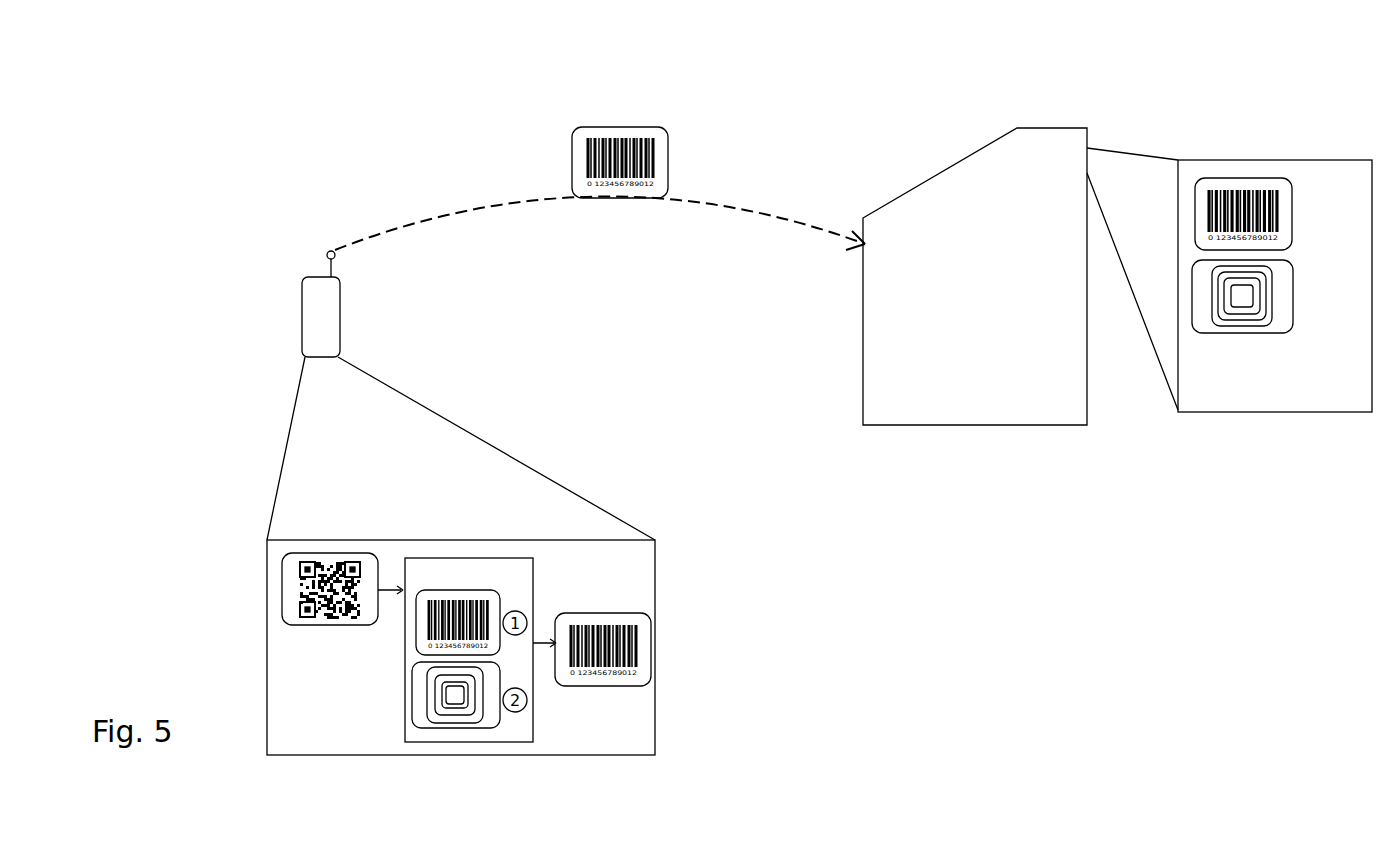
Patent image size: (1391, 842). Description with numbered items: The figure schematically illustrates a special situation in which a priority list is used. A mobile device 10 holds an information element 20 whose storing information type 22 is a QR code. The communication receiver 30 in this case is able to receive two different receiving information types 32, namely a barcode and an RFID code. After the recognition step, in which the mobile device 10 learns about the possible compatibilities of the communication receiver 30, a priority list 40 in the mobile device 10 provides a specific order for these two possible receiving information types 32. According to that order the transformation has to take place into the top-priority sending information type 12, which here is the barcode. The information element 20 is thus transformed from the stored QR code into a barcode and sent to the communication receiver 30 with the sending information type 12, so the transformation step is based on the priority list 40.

The mobile device 10 is at (312, 276).
The sending information type 12 is at (647, 198).
The information element 20 is at (645, 127).
The storing information type 22 is at (307, 625).
The communication receiver 30 is at (1040, 128).
The receiving information type 32 is at (1240, 178).
The priority list 40 is at (470, 558).